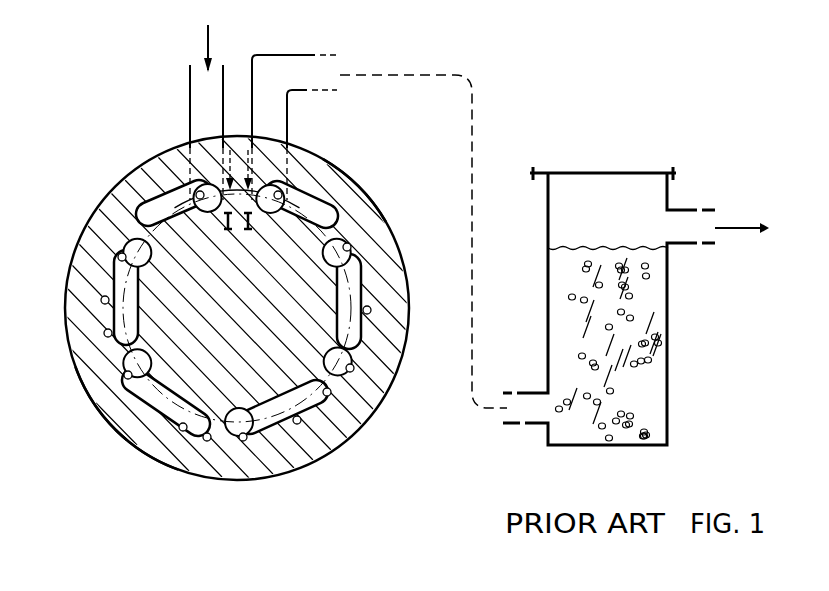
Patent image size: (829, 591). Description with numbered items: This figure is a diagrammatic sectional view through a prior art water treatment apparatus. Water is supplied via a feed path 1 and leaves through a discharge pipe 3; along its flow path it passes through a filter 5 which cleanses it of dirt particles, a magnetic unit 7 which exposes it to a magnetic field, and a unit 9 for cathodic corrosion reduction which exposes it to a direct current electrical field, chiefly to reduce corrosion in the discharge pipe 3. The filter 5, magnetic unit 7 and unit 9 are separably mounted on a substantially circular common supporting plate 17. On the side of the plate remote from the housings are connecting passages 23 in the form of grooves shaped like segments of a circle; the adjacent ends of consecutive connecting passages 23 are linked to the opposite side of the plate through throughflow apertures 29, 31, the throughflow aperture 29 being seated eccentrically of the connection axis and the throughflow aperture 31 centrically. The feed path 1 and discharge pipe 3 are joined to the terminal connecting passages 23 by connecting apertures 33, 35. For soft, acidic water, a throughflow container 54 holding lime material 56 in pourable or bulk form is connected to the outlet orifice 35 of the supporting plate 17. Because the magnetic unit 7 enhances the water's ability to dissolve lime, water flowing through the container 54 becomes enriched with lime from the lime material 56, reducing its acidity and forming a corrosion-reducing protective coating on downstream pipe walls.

The feed path 1 is at (188, 88).
The discharge pipe 3 is at (305, 55).
The filter 5 is at (118, 198).
The magnetic unit 7 is at (78, 375).
The unit for cathodic corrosion reduction 9 is at (375, 213).
The supporting plate 17 is at (130, 465).
The connecting passages 23 is at (305, 210).
The throughflow aperture 29 is at (365, 275).
The throughflow aperture 31 is at (355, 368).
The connecting aperture 33 is at (187, 175).
The connecting aperture 35 is at (302, 153).
The throughflow container 54 is at (668, 292).
The lime material 56 is at (643, 331).